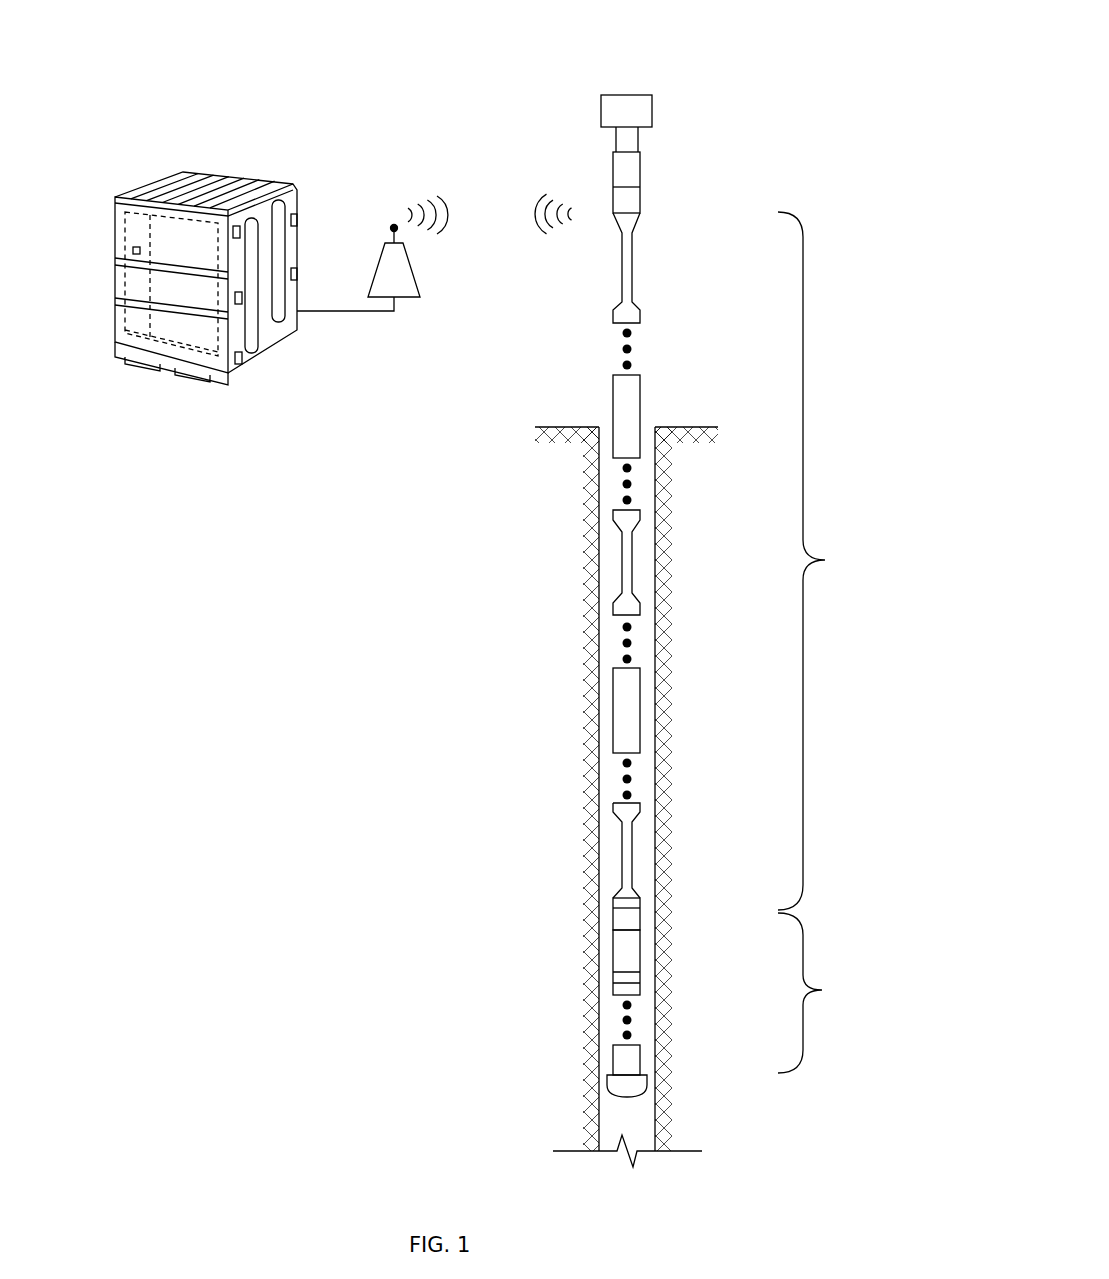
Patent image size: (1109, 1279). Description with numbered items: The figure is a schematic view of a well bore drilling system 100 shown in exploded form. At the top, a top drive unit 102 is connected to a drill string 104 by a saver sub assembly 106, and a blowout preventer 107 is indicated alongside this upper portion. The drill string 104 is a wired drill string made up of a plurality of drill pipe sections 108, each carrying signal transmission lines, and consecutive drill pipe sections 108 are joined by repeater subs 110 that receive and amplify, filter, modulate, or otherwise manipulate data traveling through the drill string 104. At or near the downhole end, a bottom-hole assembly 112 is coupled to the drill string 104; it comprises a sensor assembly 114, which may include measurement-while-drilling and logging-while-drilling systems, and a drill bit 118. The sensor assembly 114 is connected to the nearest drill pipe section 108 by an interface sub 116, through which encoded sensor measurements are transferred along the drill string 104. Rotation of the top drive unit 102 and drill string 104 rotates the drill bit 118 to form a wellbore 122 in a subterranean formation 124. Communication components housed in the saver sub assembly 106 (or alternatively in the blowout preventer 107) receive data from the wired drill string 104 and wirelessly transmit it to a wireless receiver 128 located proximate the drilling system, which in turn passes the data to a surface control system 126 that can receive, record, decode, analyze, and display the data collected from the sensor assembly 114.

The well bore drilling system 100 is at (702, 31).
The top drive unit 102 is at (664, 106).
The drill string 104 is at (825, 560).
The saver sub assembly 106 is at (630, 198).
The blowout preventer 107 is at (600, 171).
The drill pipe section 108 is at (632, 272).
The repeater sub 110 is at (640, 397).
The bottom-hole assembly 112 is at (822, 990).
The sensor assembly 114 is at (642, 953).
The interface sub 116 is at (642, 918).
The drill bit 118 is at (647, 1077).
The wellbore 122 is at (600, 903).
The subterranean formation 124 is at (563, 448).
The control system 126 is at (115, 233).
The wireless receiver 128 is at (413, 270).